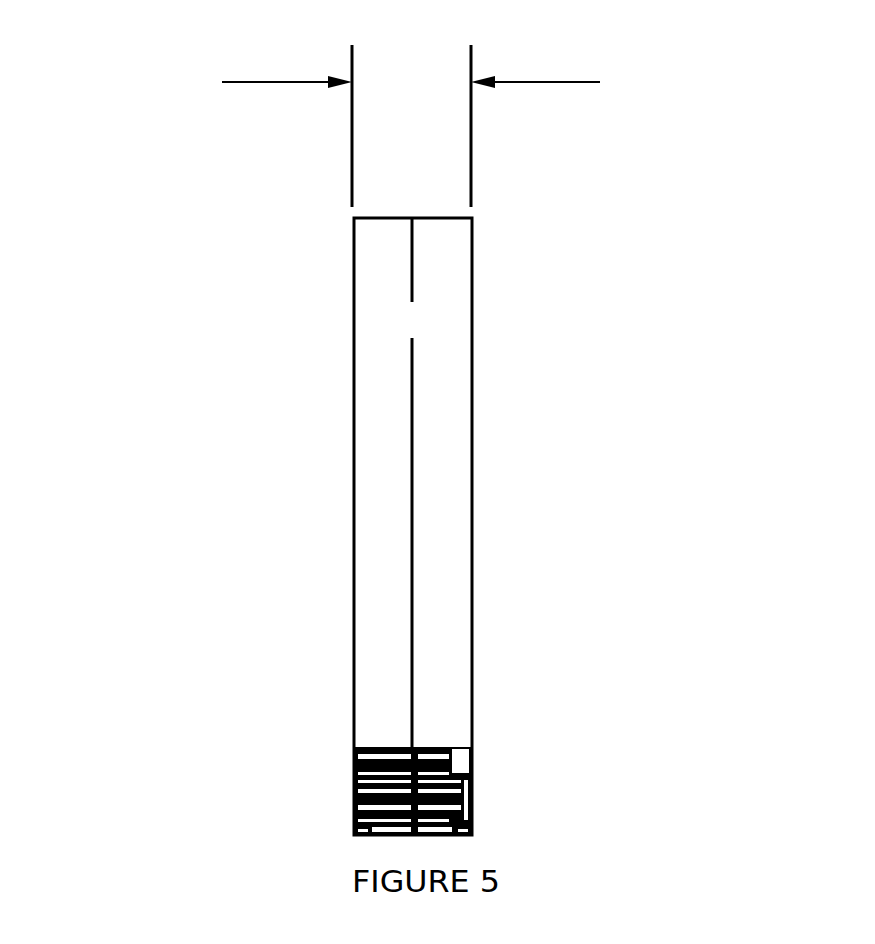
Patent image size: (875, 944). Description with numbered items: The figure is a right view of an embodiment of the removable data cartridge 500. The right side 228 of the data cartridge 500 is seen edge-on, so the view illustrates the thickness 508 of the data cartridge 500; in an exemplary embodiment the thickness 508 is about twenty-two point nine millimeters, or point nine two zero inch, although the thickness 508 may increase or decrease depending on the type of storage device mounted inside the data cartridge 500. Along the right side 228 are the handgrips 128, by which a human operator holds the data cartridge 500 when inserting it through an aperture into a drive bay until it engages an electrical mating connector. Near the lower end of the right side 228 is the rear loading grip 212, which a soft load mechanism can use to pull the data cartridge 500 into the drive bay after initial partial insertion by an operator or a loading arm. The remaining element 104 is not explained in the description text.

The data cartridge 500 is at (676, 144).
The housing body 104 is at (480, 218).
The right side 228 is at (434, 332).
The thickness 508 is at (270, 84).
The handgrips 128 is at (354, 775).
The rear loading grip 212 is at (474, 766).